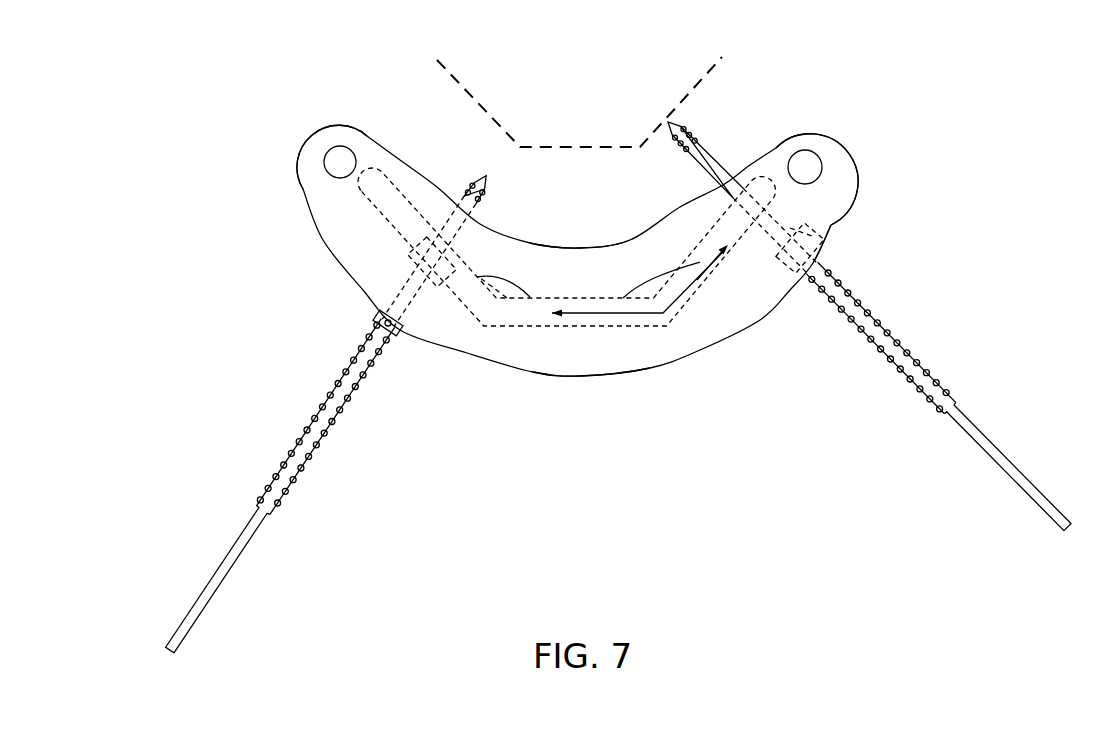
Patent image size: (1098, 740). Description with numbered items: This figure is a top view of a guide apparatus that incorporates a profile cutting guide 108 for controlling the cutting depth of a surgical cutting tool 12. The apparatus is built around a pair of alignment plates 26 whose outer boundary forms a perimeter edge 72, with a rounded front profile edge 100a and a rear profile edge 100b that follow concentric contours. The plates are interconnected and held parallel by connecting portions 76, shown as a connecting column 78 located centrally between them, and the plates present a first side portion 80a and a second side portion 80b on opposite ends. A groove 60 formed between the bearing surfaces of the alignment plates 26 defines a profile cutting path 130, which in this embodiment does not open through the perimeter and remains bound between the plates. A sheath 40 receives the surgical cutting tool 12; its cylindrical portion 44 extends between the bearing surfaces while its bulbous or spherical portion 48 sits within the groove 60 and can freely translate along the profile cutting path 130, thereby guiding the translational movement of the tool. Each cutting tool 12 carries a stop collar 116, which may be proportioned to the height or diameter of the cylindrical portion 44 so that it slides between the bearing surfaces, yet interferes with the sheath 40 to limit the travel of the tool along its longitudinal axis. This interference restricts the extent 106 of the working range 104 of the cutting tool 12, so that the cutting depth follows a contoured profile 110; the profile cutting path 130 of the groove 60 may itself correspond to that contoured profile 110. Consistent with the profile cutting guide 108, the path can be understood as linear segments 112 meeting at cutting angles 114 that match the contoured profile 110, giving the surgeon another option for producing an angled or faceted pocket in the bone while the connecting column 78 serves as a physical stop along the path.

The surgical cutting tool 12 is at (283, 494).
The alignment plates 26 is at (302, 190).
The sheath 40 is at (476, 236).
The cylindrical portion 44 is at (800, 232).
The spherical portion 48 is at (780, 182).
The groove 60 is at (672, 330).
The perimeter edge 72 is at (853, 195).
The connecting portions 76 is at (321, 119).
The connecting column 78 is at (340, 160).
The first side portion 80a is at (288, 128).
The second side portion 80b is at (860, 142).
The front profile edge 100a is at (580, 243).
The rear profile edge 100b is at (570, 381).
The working range 104 is at (416, 98).
The extent 106 is at (579, 95).
The profile cutting guide 108 is at (697, 282).
The contoured profile 110 is at (482, 107).
The linear segments 112 is at (519, 323).
The cutting angles 114 is at (506, 280).
The stop collar 116 is at (397, 335).
The profile cutting path 130 is at (698, 311).